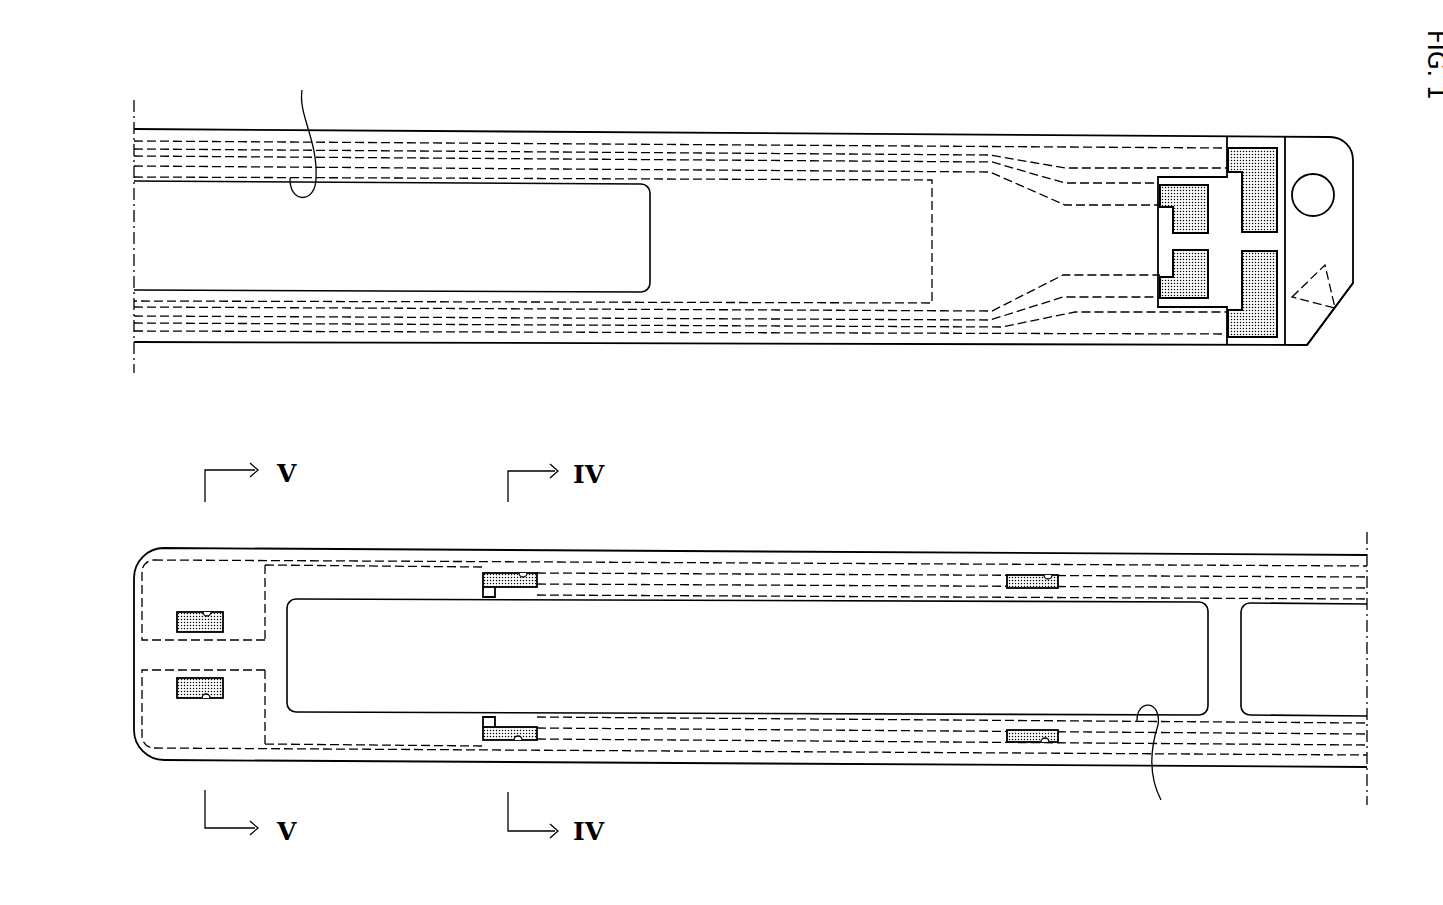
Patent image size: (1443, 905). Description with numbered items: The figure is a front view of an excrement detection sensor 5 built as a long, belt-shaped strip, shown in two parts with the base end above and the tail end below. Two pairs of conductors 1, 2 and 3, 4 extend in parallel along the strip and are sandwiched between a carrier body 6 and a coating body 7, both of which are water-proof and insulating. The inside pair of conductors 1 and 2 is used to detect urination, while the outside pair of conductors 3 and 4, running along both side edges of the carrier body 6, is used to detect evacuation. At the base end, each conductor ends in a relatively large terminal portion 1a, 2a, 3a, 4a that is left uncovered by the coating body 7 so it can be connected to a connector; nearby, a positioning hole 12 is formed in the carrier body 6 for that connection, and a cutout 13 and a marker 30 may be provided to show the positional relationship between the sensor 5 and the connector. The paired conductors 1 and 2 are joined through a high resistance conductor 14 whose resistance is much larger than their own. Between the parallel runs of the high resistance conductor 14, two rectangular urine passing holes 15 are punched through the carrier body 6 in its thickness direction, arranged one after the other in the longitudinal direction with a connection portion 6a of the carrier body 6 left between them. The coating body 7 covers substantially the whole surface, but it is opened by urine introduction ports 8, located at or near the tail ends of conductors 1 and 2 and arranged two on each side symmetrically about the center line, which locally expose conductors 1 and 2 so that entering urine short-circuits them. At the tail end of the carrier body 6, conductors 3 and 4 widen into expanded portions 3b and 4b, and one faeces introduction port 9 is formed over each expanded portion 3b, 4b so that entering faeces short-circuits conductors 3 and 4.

The conductor 1 is at (380, 160).
The terminal portion 1a is at (1192, 195).
The conductor 2 is at (380, 318).
The terminal portion 2a is at (1187, 278).
The conductor 3 is at (485, 133).
The terminal portion 3a is at (1296, 178).
The expanded portion 3b is at (165, 578).
The conductor 4 is at (490, 338).
The terminal portion 4a is at (1262, 285).
The expanded portion 4b is at (175, 732).
The excrement detection sensor 5 is at (828, 130).
The carrier body 6 is at (1262, 192).
The connection portion 6a is at (1227, 658).
The coating body 7 is at (975, 195).
The urine introduction port 8 is at (526, 575).
The faeces introduction port 9 is at (211, 612).
The positioning hole 12 is at (1330, 195).
The cutout 13 is at (1321, 330).
The high resistance conductor 14 is at (243, 290).
The urine passing hole 15 is at (733, 447).
The marker 30 is at (1340, 290).